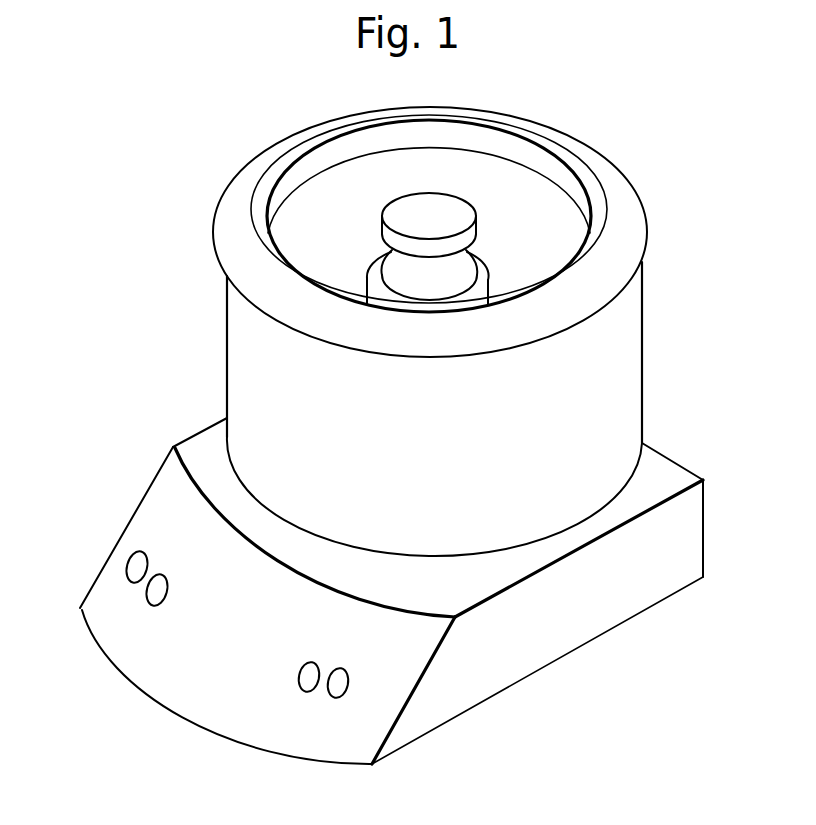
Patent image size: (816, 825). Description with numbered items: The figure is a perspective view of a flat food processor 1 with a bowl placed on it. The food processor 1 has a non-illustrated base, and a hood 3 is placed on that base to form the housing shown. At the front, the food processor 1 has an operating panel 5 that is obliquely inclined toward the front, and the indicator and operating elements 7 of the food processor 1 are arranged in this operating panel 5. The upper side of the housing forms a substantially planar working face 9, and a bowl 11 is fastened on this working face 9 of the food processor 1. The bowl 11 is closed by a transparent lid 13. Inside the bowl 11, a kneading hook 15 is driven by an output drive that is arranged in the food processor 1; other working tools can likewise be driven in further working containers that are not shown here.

The food processor 1 is at (573, 658).
The hood 3 is at (640, 573).
The operating panel 5 is at (187, 662).
The indicator and operating elements 7 is at (132, 572).
The working face 9 is at (661, 478).
The bowl 11 is at (662, 360).
The transparent lid 13 is at (628, 232).
The kneading hook 15 is at (458, 218).